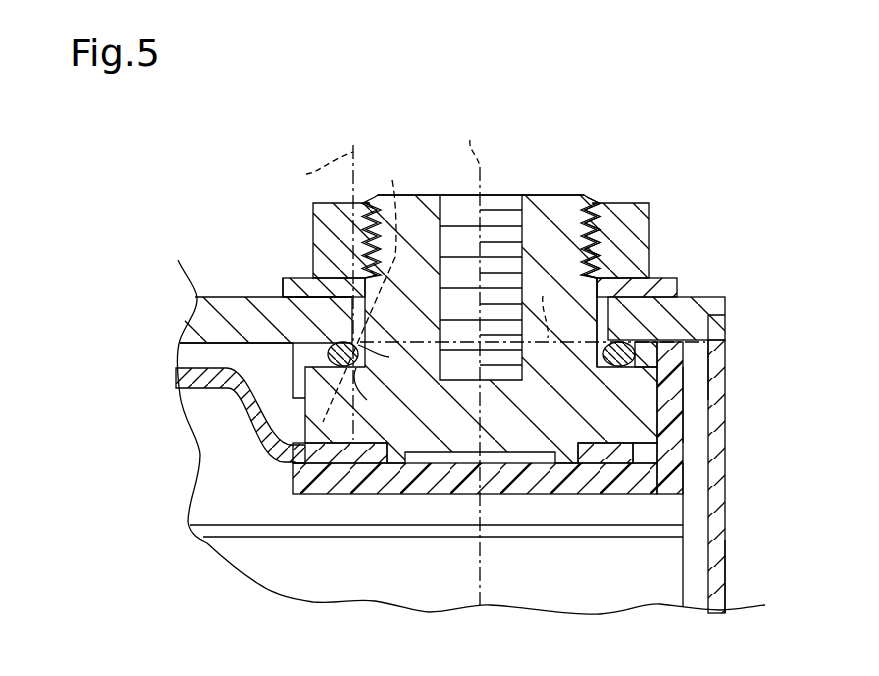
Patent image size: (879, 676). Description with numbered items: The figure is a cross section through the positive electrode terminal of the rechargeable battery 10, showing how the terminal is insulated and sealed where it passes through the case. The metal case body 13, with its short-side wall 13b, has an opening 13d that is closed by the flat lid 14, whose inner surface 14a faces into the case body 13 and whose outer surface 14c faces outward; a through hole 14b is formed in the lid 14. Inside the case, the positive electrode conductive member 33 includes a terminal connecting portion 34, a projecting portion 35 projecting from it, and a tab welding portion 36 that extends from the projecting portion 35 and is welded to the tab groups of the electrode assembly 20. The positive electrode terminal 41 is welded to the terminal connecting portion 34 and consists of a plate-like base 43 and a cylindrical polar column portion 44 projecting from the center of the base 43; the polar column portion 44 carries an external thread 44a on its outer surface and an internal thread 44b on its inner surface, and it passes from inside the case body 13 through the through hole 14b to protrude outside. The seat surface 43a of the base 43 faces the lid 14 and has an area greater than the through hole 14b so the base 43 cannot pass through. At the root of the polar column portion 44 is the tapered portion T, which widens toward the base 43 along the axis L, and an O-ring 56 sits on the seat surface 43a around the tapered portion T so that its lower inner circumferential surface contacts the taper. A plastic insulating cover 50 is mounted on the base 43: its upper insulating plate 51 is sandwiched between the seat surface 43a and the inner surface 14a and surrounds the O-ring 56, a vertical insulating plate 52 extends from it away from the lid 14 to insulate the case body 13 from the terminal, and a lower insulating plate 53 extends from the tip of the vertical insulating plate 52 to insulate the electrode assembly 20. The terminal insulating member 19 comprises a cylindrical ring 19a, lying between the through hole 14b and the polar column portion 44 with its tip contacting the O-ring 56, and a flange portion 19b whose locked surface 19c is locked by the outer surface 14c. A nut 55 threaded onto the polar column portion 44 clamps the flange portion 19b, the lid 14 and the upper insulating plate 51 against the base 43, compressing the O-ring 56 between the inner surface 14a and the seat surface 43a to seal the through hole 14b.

The rechargeable battery 10 is at (758, 146).
The case body 13 is at (725, 469).
The short-side wall 13b is at (725, 581).
The opening 13d is at (706, 383).
The lid 14 is at (190, 317).
The inner surface 14a is at (686, 336).
The through hole 14b is at (675, 285).
The outer surface 14c is at (190, 287).
The terminal insulating member 19 is at (285, 283).
The ring 19a is at (597, 333).
The flange portion 19b is at (290, 276).
The locked surface 19c is at (305, 300).
The electrode assembly 20 is at (699, 559).
The positive electrode conductive member 33 is at (180, 378).
The terminal connecting portion 34 is at (320, 480).
The projecting portion 35 is at (250, 423).
The tab welding portion 36 is at (184, 358).
The positive electrode terminal 41 is at (430, 194).
The base 43 is at (687, 418).
The seat surface 43a is at (640, 367).
The polar column portion 44 is at (560, 195).
The external thread 44a is at (598, 214).
The internal thread 44b is at (512, 214).
The insulating cover 50 is at (687, 476).
The upper insulating plate 51 is at (683, 352).
The vertical insulating plate 52 is at (683, 403).
The lower insulating plate 53 is at (388, 495).
The nut 55 is at (650, 213).
The O-ring 56 is at (328, 350).